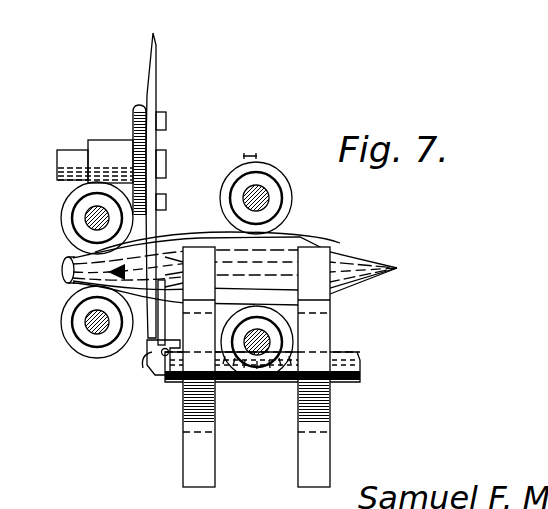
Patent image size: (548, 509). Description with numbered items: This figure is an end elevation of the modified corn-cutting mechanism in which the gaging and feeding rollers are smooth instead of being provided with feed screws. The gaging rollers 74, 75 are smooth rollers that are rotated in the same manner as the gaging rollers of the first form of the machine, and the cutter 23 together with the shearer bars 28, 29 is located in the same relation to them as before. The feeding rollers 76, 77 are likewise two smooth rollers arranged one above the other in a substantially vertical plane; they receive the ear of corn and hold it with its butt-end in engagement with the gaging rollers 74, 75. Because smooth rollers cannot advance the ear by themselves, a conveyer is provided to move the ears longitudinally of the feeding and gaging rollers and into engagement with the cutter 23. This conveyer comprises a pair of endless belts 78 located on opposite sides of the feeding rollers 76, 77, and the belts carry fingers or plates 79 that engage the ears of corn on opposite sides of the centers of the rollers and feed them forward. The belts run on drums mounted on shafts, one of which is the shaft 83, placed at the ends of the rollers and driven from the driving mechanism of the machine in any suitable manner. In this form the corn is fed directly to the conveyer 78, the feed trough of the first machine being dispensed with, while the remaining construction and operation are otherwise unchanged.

The cutter 23 is at (156, 78).
The shearer bar 28 is at (156, 358).
The shearer bar 29 is at (148, 325).
The gaging roller 74 is at (66, 222).
The gaging roller 75 is at (70, 322).
The feeding roller 76 is at (270, 180).
The feeding roller 77 is at (283, 333).
The endless belts 78 is at (270, 392).
The fingers or plates 79 is at (193, 255).
The shaft 83 is at (362, 366).